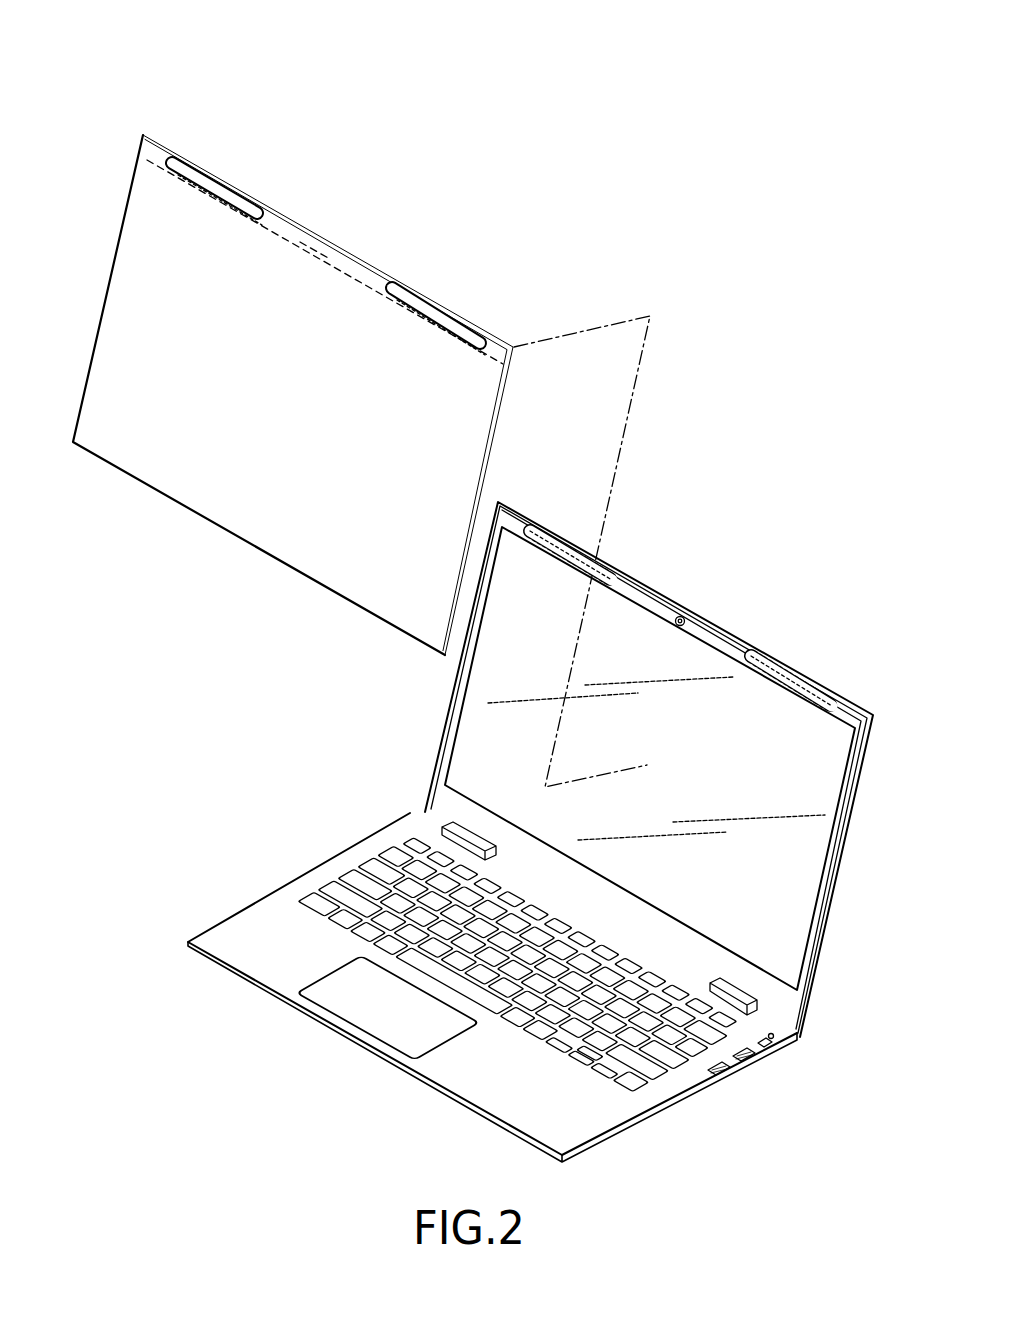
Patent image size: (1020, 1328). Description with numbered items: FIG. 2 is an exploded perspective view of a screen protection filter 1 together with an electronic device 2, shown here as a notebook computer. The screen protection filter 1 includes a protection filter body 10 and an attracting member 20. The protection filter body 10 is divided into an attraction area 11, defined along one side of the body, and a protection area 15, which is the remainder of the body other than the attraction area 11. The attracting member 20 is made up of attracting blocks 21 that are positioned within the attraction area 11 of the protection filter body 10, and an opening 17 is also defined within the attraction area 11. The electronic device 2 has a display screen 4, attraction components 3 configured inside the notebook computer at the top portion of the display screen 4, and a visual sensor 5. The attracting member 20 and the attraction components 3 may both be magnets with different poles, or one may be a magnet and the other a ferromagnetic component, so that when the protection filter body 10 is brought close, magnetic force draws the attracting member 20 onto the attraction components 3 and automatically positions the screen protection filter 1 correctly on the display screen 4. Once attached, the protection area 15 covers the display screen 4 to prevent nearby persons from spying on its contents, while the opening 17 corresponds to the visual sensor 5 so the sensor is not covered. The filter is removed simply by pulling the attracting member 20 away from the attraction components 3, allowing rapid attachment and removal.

The screen protection filter 1 is at (133, 92).
The electronic device 2 is at (890, 748).
The attraction component 3 is at (552, 545).
The display screen 4 is at (640, 640).
The visual sensor 5 is at (684, 616).
The protection filter body 10 is at (80, 112).
The attraction area 11 is at (148, 146).
The protection area 15 is at (152, 193).
The opening 17 is at (313, 247).
The attracting member 20 is at (421, 217).
The attracting block 21 is at (250, 210).